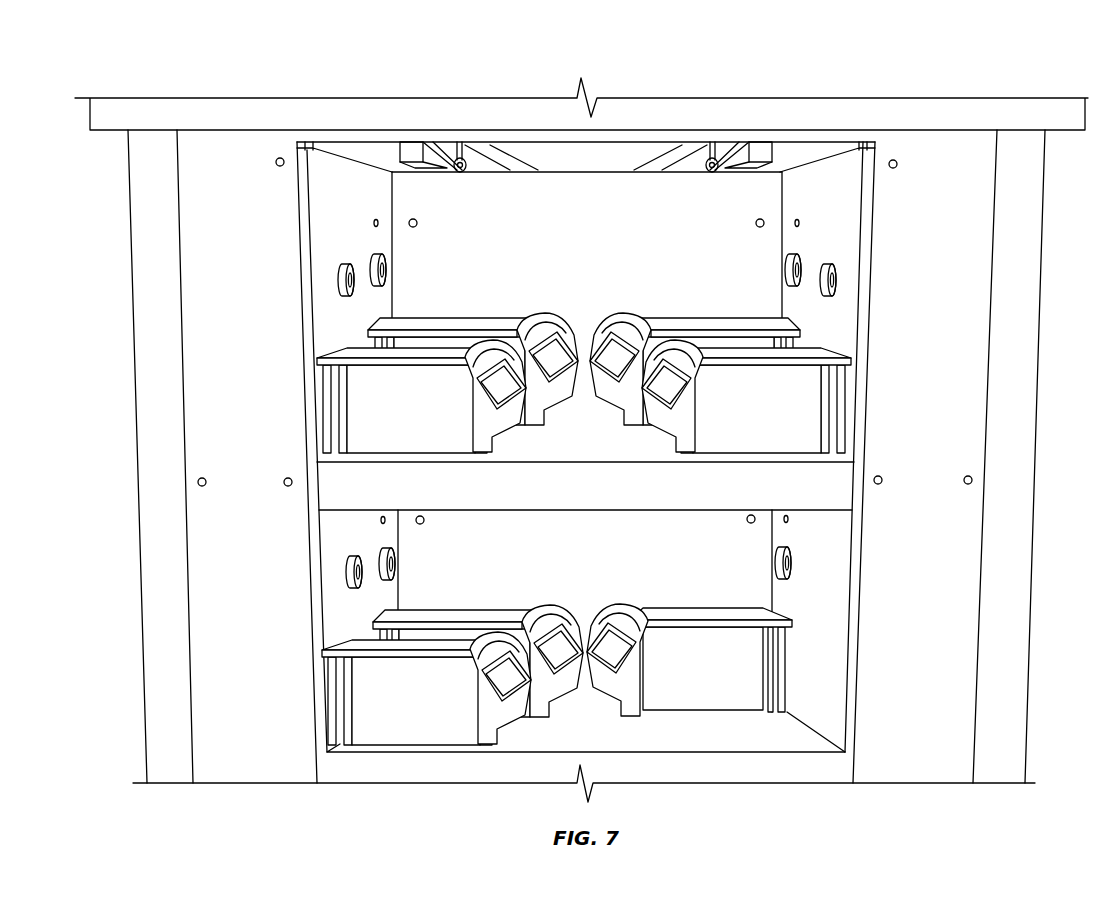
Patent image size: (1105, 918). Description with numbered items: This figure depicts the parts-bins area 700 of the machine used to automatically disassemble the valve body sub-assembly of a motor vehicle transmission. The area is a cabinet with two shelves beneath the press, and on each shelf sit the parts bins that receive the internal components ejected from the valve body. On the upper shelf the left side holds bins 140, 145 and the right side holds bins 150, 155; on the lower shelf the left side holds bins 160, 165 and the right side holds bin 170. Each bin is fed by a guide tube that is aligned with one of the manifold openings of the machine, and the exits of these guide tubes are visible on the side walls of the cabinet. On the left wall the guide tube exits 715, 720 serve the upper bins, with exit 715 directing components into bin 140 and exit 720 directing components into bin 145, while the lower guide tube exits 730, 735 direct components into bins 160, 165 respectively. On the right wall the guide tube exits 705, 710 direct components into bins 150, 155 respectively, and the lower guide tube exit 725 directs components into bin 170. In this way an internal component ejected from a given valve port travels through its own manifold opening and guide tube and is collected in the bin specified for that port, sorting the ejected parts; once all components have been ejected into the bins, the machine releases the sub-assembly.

The parts-bins area 700 is at (808, 86).
The guide tube exit 705 is at (795, 254).
The guide tube exit 710 is at (834, 263).
The guide tube exit 715 is at (376, 254).
The guide tube exit 720 is at (340, 264).
The guide tube exit 725 is at (793, 562).
The guide tube exit 730 is at (384, 548).
The guide tube exit 735 is at (350, 556).
The bin 140 is at (362, 327).
The bin 145 is at (324, 352).
The bin 150 is at (808, 327).
The bin 155 is at (855, 347).
The bin 160 is at (378, 618).
The bin 165 is at (340, 642).
The bin 170 is at (793, 615).